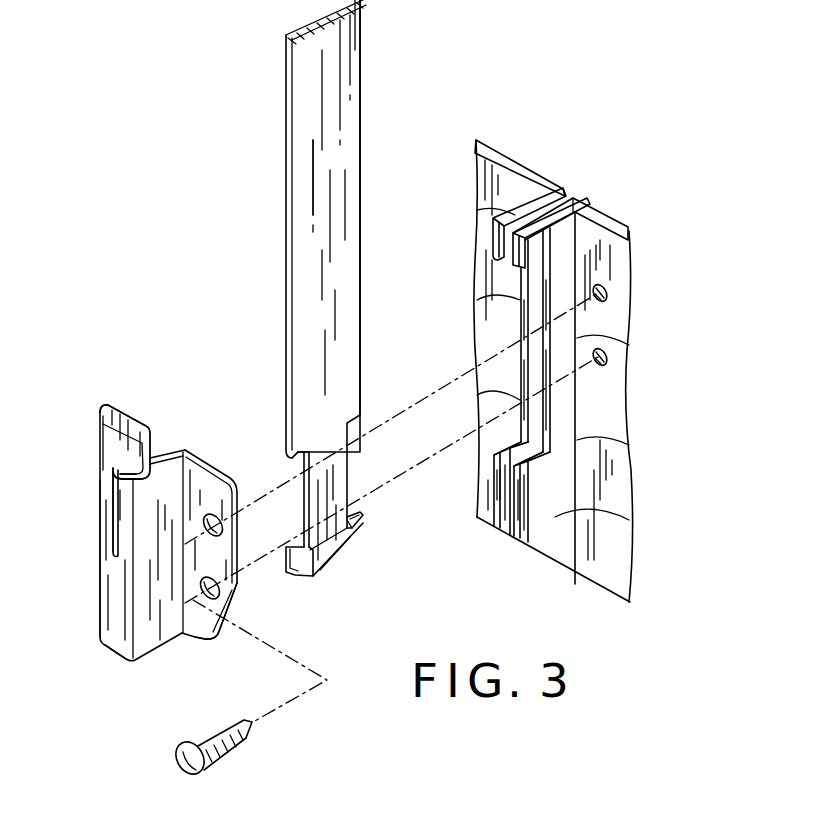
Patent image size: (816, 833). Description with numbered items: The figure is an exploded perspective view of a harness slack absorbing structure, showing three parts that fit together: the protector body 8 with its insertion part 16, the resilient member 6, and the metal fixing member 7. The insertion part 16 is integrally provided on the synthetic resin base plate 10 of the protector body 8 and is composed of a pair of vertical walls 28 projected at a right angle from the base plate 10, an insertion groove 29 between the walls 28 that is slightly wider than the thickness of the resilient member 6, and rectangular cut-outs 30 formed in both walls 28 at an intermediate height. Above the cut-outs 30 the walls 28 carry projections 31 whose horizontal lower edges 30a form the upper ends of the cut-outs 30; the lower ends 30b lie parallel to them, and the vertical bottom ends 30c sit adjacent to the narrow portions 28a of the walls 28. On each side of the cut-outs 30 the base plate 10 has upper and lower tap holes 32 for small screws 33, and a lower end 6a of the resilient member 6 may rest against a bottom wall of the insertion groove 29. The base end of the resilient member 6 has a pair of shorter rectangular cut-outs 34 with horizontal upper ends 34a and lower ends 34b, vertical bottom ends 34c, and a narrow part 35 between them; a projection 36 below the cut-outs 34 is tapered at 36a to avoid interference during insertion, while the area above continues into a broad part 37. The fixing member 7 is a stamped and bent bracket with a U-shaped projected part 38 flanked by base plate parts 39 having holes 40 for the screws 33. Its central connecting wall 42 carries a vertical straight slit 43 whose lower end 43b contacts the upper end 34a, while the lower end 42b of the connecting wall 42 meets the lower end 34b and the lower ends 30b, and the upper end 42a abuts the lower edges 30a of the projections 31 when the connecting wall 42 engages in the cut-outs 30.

The resilient member 6 is at (287, 148).
The broad part 37 is at (313, 268).
The rectangular cut-outs 34 is at (348, 498).
The upper ends of the cut-outs 34a is at (290, 452).
The lower ends of the cut-outs 34b is at (292, 578).
The bottom ends of the cut-outs 34c is at (303, 466).
The projection 36 is at (318, 562).
The tapered part 36a is at (355, 540).
The narrow part 35 is at (352, 522).
The lower end of the resilient member 6a is at (337, 563).
The projected part 38 is at (98, 576).
The fixing member 7 is at (140, 392).
The upper end of the connecting wall 42a is at (100, 430).
The slit 43 is at (102, 470).
The lower end of the slit 43b is at (111, 523).
The connecting wall 42 is at (102, 604).
The lower end of the connecting wall 42b is at (112, 657).
The base plate parts 39 is at (198, 470).
The holes 40 is at (202, 645).
The small screws 33 is at (232, 760).
The protector body 8 is at (642, 494).
The base plate 10 is at (613, 208).
The insertion part 16 is at (513, 197).
The projections 31 is at (470, 213).
The lower edges of the projections 30a is at (470, 250).
The rectangular cut-outs 30 is at (524, 305).
The insertion groove 29 is at (528, 298).
The lower ends of the cut-outs 30b is at (512, 437).
The bottom ends of the cut-outs 30c is at (553, 410).
The vertical walls 28 is at (494, 490).
The holes 32 is at (608, 297).
The narrow portions of the walls 28a is at (612, 362).